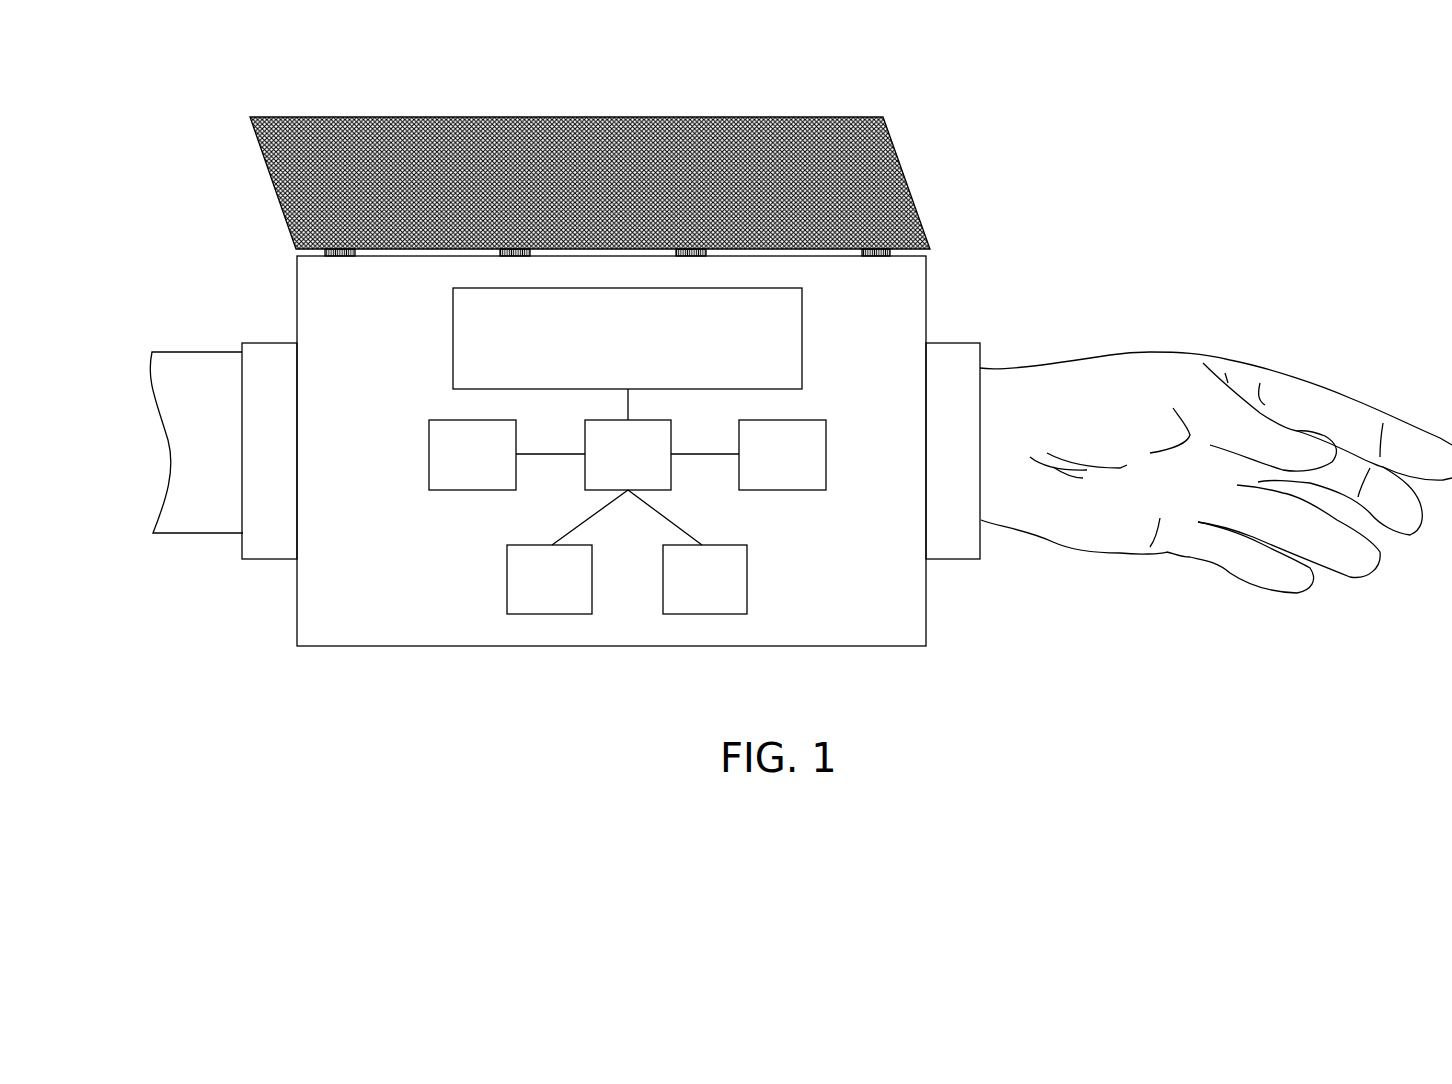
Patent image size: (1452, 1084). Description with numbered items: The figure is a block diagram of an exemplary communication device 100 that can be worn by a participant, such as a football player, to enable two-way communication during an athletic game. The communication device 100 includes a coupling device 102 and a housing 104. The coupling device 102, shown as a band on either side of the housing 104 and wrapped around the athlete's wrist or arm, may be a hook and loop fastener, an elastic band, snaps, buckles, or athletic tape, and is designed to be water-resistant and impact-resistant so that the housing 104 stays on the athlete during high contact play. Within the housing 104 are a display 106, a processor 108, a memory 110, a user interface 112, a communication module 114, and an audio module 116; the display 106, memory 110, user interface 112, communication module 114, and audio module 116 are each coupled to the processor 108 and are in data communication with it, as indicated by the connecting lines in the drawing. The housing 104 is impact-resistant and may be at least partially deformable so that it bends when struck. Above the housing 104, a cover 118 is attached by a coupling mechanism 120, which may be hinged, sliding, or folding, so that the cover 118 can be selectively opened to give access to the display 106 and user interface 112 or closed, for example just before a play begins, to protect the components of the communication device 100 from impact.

The communication device 100 is at (246, 165).
The coupling device 102 is at (965, 343).
The housing 104 is at (926, 287).
The display 106 is at (802, 308).
The processor 108 is at (655, 421).
The memory 110 is at (429, 434).
The user interface 112 is at (507, 562).
The communication module 114 is at (747, 563).
The audio module 116 is at (826, 430).
The cover 118 is at (896, 147).
The coupling mechanism 120 is at (325, 252).